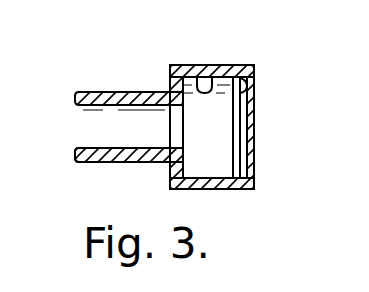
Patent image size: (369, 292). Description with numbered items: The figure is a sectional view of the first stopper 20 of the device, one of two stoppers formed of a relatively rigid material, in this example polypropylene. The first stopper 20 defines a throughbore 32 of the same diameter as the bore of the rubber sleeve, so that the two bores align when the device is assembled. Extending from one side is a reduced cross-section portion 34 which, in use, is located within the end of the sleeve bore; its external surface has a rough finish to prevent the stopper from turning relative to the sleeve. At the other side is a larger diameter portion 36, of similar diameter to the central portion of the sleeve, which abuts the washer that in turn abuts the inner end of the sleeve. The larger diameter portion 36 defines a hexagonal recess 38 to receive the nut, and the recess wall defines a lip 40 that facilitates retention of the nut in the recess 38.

The first stopper 20 is at (273, 184).
The throughbore 32 is at (93, 148).
The reduced cross-section portion 34 is at (100, 162).
The larger diameter portion 36 is at (228, 189).
The hexagonal recess 38 is at (196, 74).
The lip 40 is at (250, 94).